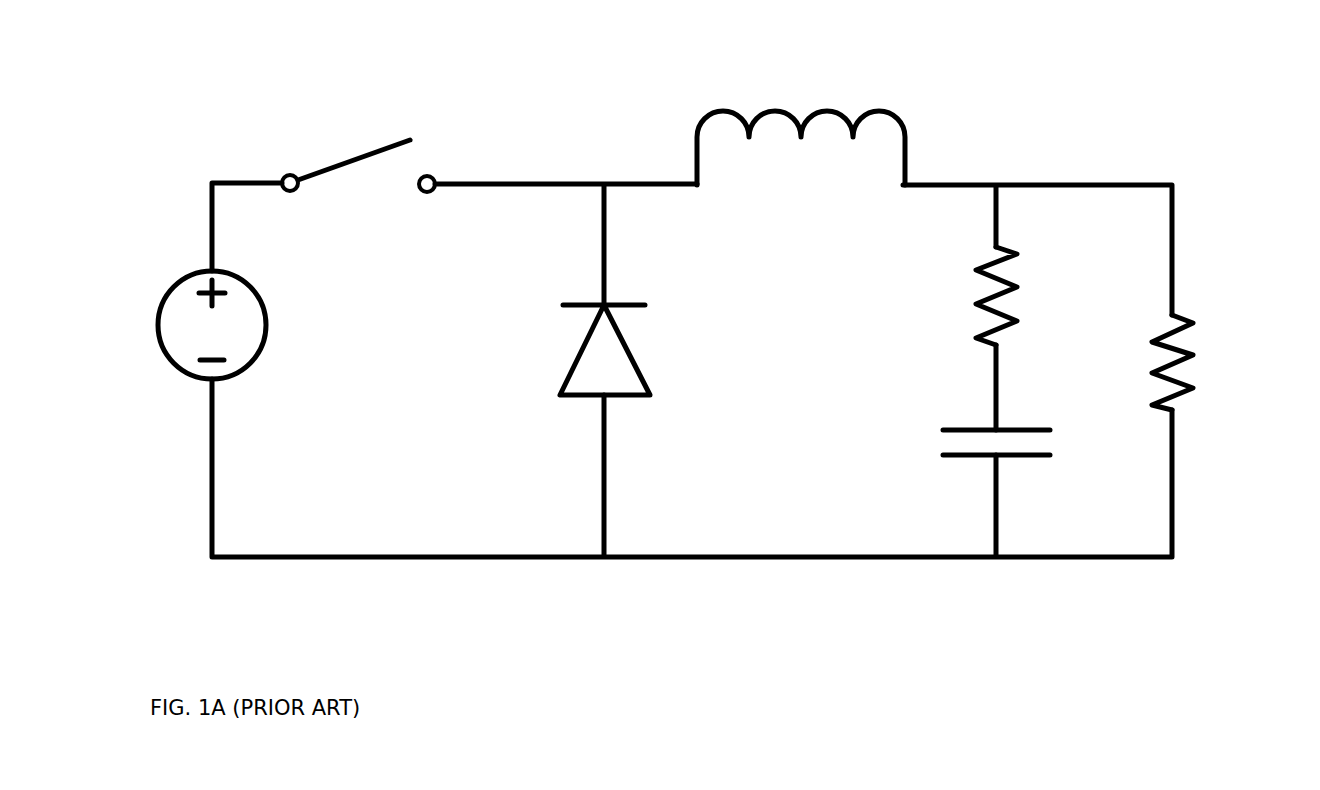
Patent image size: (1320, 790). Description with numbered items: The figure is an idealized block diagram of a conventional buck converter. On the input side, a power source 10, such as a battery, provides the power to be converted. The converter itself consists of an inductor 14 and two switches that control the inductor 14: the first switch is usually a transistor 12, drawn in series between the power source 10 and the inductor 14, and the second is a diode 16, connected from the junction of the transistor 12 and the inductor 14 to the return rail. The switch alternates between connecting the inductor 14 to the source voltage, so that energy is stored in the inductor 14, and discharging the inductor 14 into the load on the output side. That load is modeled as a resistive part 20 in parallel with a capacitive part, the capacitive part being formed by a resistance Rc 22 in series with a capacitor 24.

The power source 10 is at (261, 325).
The transistor 12 is at (358, 133).
The inductor 14 is at (801, 107).
The diode 16 is at (646, 350).
The resistive part 20 is at (1215, 362).
The Rc 22 is at (934, 296).
The capacitor 24 is at (951, 444).